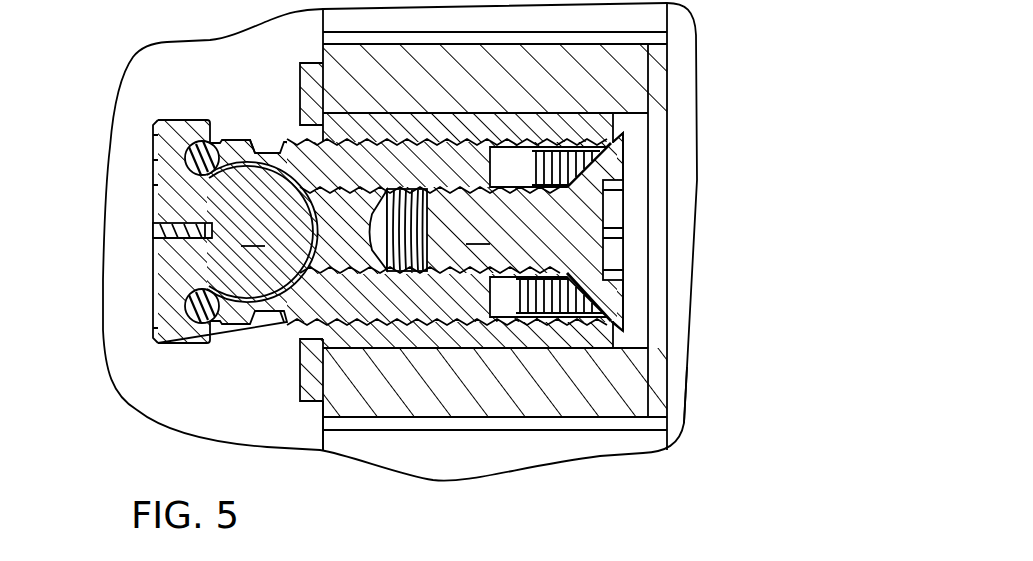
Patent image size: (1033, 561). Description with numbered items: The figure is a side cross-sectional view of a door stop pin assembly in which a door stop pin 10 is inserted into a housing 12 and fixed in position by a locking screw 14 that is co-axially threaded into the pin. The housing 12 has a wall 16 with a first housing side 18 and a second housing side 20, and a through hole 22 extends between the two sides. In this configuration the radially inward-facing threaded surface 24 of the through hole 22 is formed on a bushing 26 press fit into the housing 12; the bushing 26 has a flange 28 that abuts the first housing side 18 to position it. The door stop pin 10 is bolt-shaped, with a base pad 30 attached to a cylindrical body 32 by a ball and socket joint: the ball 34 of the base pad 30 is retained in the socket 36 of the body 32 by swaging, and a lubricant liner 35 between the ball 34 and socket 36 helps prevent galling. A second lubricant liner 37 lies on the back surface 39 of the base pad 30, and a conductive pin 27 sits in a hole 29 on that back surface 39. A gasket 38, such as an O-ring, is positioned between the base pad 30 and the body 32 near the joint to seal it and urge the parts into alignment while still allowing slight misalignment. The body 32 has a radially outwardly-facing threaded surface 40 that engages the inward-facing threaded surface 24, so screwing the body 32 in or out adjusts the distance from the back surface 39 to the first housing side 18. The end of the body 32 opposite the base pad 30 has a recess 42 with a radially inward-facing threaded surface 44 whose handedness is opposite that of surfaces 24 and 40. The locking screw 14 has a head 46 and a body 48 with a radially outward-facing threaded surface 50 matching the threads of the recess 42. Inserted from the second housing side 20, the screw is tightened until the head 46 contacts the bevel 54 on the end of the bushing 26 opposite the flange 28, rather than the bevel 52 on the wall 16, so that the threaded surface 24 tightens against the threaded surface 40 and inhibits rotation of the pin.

The door stop pin 10 is at (190, 387).
The housing 12 is at (473, 397).
The locking screw 14 is at (607, 161).
The wall 16 is at (562, 413).
The first housing side 18 is at (320, 450).
The second housing side 20 is at (670, 393).
The through hole 22 is at (593, 297).
The radially inward-facing threaded surface 24 is at (567, 290).
The bushing 26 is at (388, 345).
The conductive pin 27 is at (153, 232).
The flange 28 is at (297, 382).
The hole 29 is at (172, 247).
The base pad 30 is at (165, 190).
The body 32 is at (438, 162).
The ball 34 is at (262, 232).
The lubricant liner 35 is at (233, 146).
The socket 36 is at (285, 166).
The lubricant liner 37 is at (153, 126).
The gasket 38 is at (200, 152).
The back surface 39 is at (153, 174).
The radially outwardly-facing threaded surface 40 is at (287, 325).
The recess 42 is at (368, 217).
The radially inward-facing threaded surface 44 is at (387, 278).
The head 46 is at (593, 213).
The body 48 is at (494, 232).
The radially outward-facing threaded surface 50 is at (519, 290).
The bevel 52 is at (670, 347).
The bevel 54 is at (620, 318).